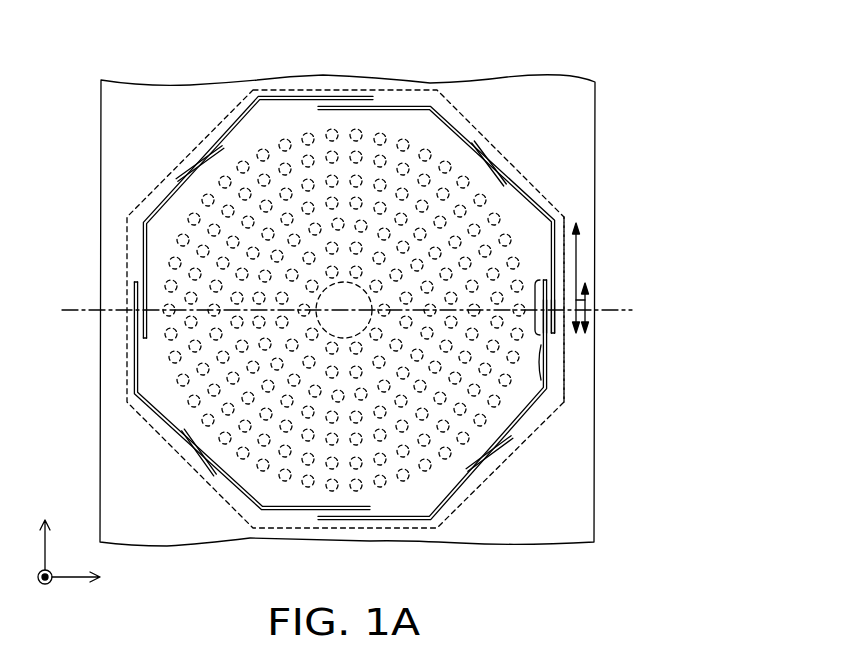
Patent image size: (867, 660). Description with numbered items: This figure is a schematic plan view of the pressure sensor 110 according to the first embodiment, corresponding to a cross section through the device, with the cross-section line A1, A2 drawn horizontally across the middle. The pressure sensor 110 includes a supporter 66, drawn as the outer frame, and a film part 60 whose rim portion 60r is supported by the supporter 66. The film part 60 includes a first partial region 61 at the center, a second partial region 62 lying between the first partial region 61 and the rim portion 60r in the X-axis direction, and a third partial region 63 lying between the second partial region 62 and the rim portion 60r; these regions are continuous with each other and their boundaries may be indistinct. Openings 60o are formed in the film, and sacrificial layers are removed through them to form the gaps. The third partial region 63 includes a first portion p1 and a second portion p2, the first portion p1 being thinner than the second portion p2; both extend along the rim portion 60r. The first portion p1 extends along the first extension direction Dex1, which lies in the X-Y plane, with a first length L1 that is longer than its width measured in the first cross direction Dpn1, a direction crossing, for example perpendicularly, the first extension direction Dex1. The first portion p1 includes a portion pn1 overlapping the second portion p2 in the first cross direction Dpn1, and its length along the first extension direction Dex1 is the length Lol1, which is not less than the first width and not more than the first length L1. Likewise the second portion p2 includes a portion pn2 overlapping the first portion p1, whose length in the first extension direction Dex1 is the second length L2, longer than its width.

The pressure sensor 110 is at (413, 308).
The supporter 66 is at (553, 132).
The film part 60 is at (160, 268).
The openings 60o is at (293, 187).
The rim portion 60r is at (565, 222).
The first partial region 61 is at (348, 300).
The second partial region 62 is at (422, 297).
The third partial region 63 is at (541, 260).
The first portion p1 is at (562, 318).
The second portion p2 is at (556, 316).
The portion overlapping the second portion pn1 is at (520, 340).
The portion overlapping the first portion pn2 is at (545, 310).
The first length L1 is at (577, 260).
The second length L2 is at (585, 306).
The length of the overlapping portion Lol1 is at (585, 300).
The line A1-A2 end A1 is at (82, 322).
The line A1-A2 end A2 is at (622, 322).
The first extension direction Dex1 is at (693, 402).
The first cross direction Dpn1 is at (693, 402).